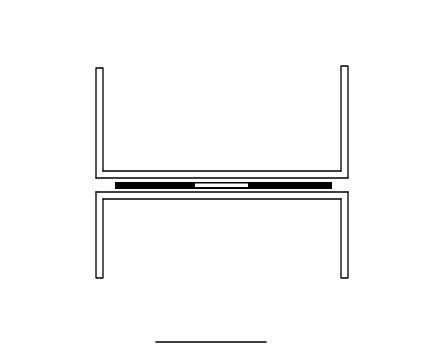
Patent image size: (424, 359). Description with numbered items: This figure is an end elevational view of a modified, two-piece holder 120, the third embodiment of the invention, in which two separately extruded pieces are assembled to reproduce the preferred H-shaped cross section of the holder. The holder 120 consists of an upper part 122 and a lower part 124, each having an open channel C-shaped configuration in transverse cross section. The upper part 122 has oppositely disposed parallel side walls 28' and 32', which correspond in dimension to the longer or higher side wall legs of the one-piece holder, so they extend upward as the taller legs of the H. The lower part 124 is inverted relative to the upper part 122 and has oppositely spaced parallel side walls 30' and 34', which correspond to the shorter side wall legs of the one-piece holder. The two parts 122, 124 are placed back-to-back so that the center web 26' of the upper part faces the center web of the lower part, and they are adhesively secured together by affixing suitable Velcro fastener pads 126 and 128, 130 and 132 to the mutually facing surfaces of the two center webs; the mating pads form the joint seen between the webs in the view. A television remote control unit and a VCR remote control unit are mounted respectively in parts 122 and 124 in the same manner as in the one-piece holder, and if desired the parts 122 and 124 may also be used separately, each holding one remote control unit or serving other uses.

The holder 120 is at (111, 70).
The upper part 122 is at (86, 142).
The lower part 124 is at (87, 212).
The Velcro fastener pad 126 is at (151, 177).
The Velcro fastener pad 128 is at (186, 198).
The Velcro fastener pad 130 is at (279, 181).
The Velcro fastener pad 132 is at (290, 193).
The side wall 28' is at (74, 104).
The side wall 32' is at (292, 122).
The side wall 30' is at (71, 265).
The side wall 34' is at (301, 236).
The center web 26' is at (124, 127).